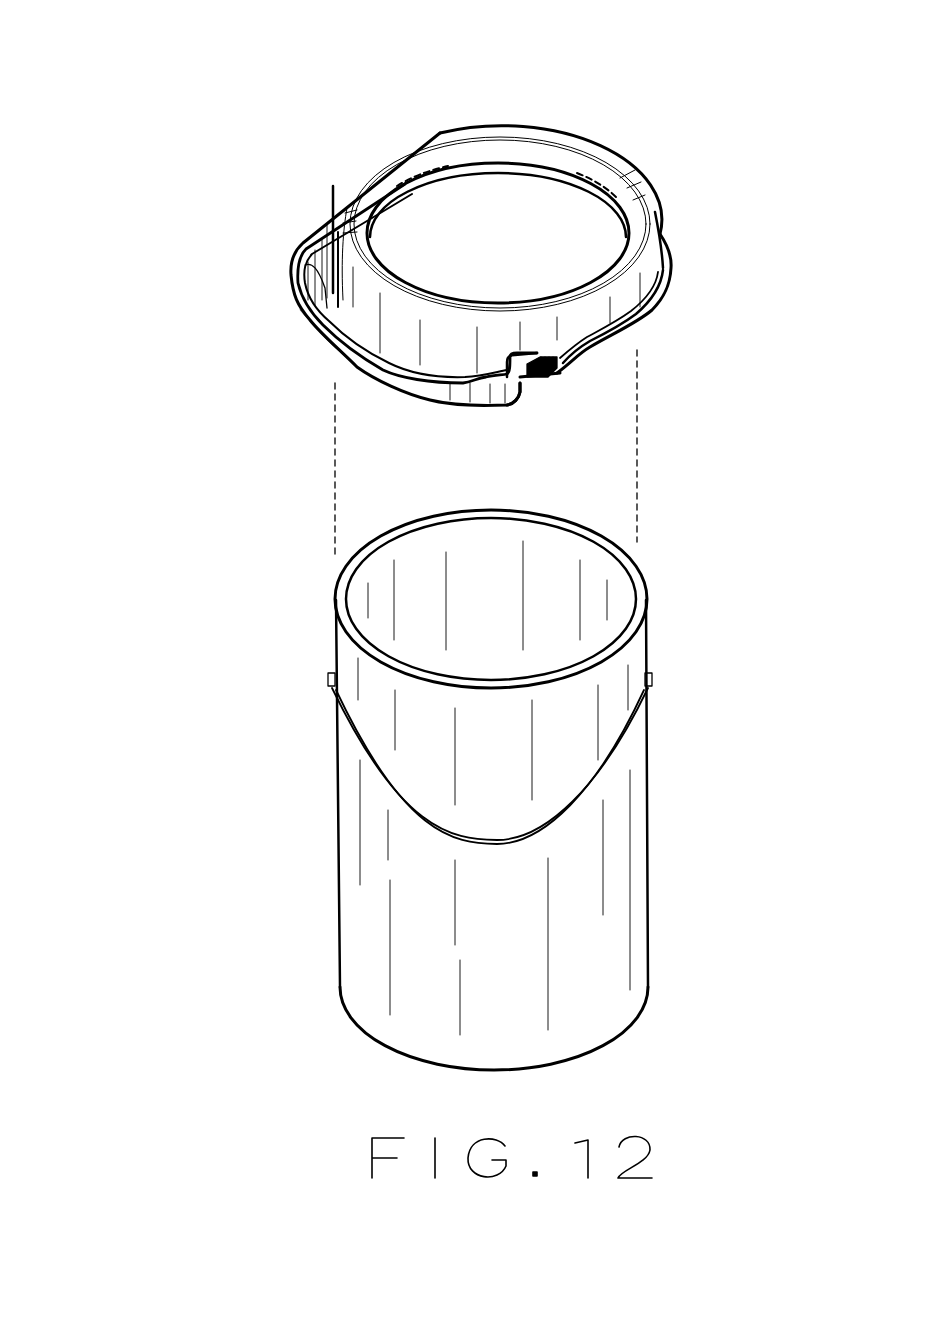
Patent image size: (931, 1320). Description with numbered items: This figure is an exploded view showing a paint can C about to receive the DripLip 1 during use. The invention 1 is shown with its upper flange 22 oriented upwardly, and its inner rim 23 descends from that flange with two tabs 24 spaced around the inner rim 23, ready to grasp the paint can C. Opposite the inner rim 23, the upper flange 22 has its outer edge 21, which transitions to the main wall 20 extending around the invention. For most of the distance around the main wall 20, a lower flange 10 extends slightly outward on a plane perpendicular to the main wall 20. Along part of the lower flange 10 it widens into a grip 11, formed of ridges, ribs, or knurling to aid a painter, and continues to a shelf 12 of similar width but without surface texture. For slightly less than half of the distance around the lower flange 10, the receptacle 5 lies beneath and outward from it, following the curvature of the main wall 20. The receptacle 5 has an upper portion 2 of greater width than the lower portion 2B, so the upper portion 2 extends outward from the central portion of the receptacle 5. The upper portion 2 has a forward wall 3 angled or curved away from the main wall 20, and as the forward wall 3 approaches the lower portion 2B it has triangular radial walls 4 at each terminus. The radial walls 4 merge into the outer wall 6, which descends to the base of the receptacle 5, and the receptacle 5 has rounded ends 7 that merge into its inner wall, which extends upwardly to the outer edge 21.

The DripLip 1 is at (278, 78).
The upper portion 2 is at (297, 273).
The lower portion 2B is at (327, 308).
The forward wall 3 is at (328, 338).
The radial walls 4 is at (312, 262).
The receptacle 5 is at (331, 248).
The outer wall 6 is at (493, 393).
The rounded ends 7 is at (517, 393).
The lower flange 10 is at (555, 177).
The grip 11 is at (545, 377).
The shelf 12 is at (563, 360).
The main wall 20 is at (627, 300).
The outer edge 21 is at (654, 213).
The upper flange 22 is at (630, 183).
The inner rim 23 is at (540, 158).
The tabs 24 is at (428, 162).
The paint can C is at (410, 860).